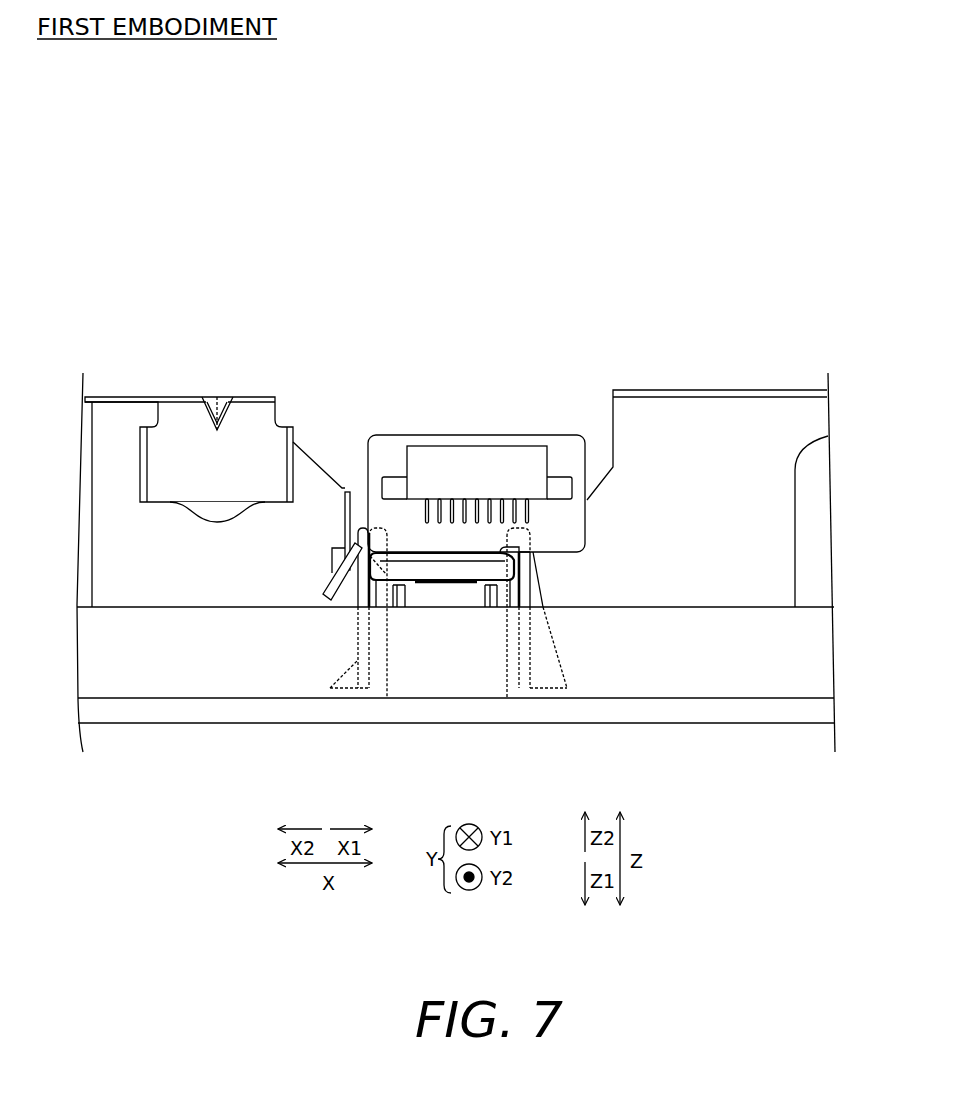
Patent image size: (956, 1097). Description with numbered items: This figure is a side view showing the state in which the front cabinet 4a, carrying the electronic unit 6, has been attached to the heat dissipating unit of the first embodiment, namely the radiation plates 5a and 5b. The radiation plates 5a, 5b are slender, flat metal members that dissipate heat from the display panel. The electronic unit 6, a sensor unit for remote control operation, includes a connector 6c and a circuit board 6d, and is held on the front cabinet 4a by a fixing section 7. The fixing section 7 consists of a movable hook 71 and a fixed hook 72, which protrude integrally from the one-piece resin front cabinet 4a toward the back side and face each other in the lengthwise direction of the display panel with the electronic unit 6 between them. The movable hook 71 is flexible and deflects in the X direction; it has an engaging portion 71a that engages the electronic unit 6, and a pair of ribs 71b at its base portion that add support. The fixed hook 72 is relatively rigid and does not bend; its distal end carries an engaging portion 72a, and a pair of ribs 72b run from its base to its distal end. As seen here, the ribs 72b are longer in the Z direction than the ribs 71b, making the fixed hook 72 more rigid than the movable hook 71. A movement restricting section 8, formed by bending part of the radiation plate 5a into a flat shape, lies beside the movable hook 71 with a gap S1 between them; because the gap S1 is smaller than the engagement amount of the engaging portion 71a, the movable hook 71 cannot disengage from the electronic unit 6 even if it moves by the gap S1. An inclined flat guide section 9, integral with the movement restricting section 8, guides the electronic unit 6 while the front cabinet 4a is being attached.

The front cabinet 4a is at (210, 735).
The radiation plate 5a is at (221, 387).
The radiation plate 5b is at (672, 390).
The electronic unit 6 is at (487, 425).
The connector 6c is at (440, 445).
The circuit board 6d is at (535, 435).
The fixing section 7 is at (579, 557).
The movable hook 71 is at (362, 519).
The engaging portion 71a is at (385, 698).
The ribs 71b is at (345, 690).
The fixed hook 72 is at (559, 592).
The engaging portion 72a is at (507, 698).
The ribs 72b is at (548, 690).
The movement restricting section 8 is at (347, 490).
The guide section 9 is at (330, 577).
The gap S1 is at (354, 556).